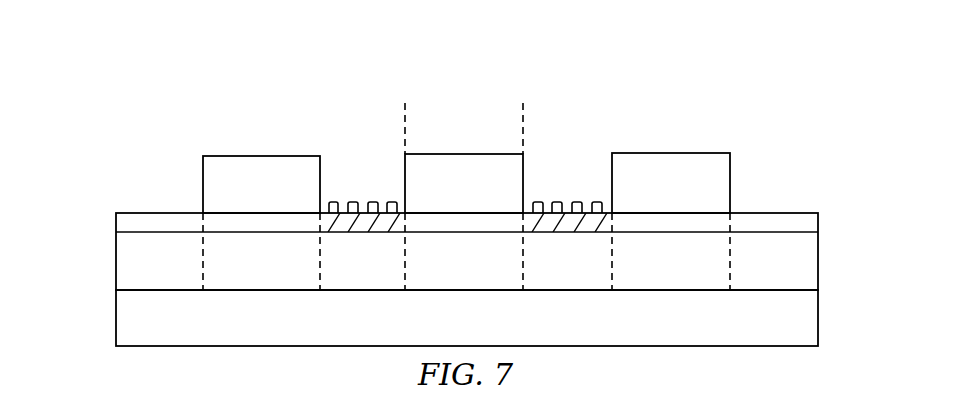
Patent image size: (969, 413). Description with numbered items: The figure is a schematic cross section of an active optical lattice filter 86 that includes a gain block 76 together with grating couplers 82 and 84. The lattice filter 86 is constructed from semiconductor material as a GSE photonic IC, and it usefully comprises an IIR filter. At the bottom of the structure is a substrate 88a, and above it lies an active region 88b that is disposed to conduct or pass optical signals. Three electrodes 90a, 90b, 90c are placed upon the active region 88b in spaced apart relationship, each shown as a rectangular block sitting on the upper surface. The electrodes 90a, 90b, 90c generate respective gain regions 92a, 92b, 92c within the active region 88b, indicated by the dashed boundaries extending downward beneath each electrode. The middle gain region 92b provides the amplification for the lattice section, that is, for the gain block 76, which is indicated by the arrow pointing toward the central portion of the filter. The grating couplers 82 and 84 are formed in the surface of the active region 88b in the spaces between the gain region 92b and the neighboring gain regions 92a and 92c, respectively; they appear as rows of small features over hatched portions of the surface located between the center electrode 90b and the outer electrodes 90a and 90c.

The gain block 76 is at (497, 66).
The active optical lattice filter 86 is at (126, 168).
The substrate 88a is at (116, 318).
The active region 88b is at (116, 263).
The electrode 90a is at (262, 156).
The electrode 90b is at (464, 154).
The electrode 90c is at (672, 153).
The grating coupler 82 is at (352, 202).
The grating coupler 84 is at (540, 202).
The gain region 92a is at (277, 271).
The gain region 92b is at (482, 271).
The gain region 92c is at (690, 271).